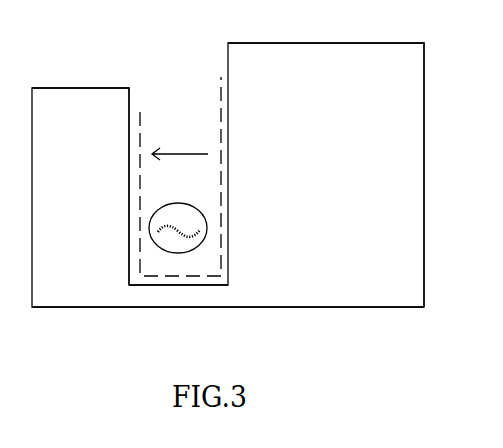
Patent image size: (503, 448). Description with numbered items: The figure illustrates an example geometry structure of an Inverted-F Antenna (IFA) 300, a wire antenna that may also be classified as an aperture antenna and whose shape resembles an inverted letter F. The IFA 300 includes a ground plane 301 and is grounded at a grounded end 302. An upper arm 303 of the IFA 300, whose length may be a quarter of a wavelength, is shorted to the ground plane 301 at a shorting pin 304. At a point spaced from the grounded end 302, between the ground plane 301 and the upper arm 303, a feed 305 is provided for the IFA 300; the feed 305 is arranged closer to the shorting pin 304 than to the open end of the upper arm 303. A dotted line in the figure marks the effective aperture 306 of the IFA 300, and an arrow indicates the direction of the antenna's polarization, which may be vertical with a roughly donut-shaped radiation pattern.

The Inverted-F Antenna (IFA) 300 is at (298, 30).
The ground plane 301 is at (390, 190).
The grounded end 302 is at (228, 285).
The upper arm 303 is at (73, 128).
The shorting pin 304 is at (132, 295).
The feed 305 is at (199, 235).
The effective aperture 306 is at (140, 112).